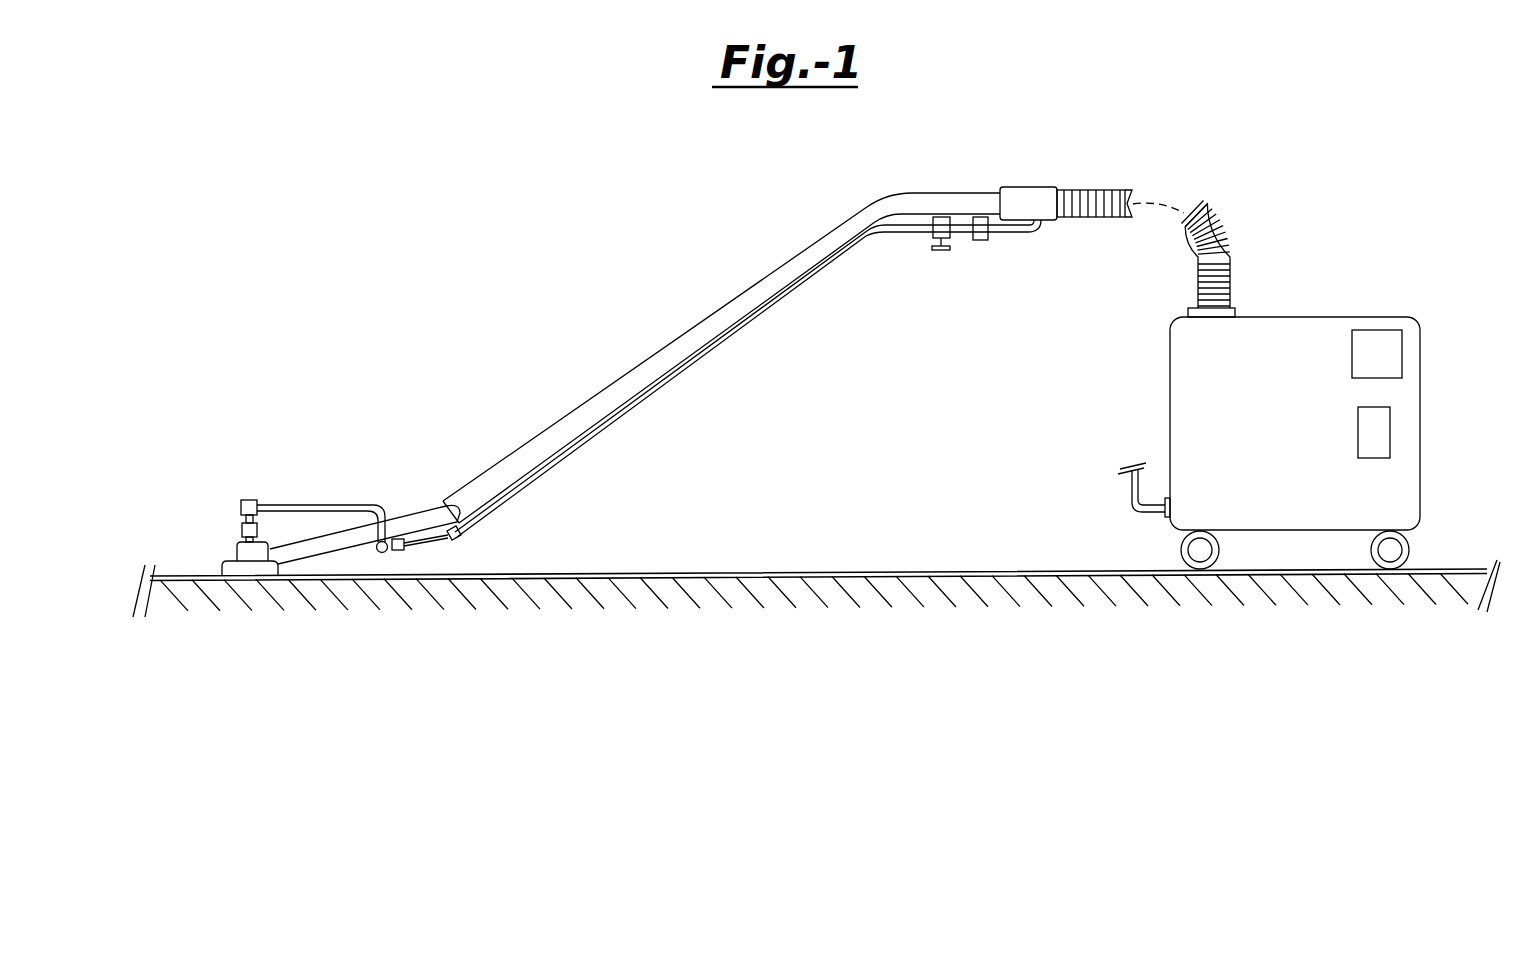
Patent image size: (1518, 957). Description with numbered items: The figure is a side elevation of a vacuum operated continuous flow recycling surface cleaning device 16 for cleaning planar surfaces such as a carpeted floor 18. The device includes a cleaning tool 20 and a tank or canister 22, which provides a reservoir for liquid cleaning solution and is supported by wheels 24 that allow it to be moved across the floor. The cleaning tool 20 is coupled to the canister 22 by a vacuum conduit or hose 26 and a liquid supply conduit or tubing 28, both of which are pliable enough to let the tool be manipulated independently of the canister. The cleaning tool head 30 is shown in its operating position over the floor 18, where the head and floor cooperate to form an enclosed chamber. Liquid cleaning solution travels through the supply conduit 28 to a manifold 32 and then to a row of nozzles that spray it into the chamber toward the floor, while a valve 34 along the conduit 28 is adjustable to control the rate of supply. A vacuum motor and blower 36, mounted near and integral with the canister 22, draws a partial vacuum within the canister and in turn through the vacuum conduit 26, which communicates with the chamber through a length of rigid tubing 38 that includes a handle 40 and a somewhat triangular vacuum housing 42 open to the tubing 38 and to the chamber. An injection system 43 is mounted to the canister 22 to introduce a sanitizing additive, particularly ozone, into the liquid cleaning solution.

The continuous flow recycling surface cleaning device 16 is at (593, 267).
The carpeted floor 18 is at (793, 572).
The cleaning tool 20 is at (663, 343).
The canister 22 is at (1183, 375).
The wheels 24 is at (1410, 545).
The vacuum conduit 26 is at (1082, 190).
The liquid supply conduit 28 is at (997, 233).
The cleaning tool head 30 is at (237, 552).
The manifold 32 is at (246, 498).
The valve 34 is at (940, 230).
The vacuum motor and blower 36 is at (1395, 350).
The rigid tubing 38 is at (608, 393).
The handle 40 is at (1022, 195).
The vacuum housing 42 is at (321, 530).
The injection system 43 is at (1392, 430).